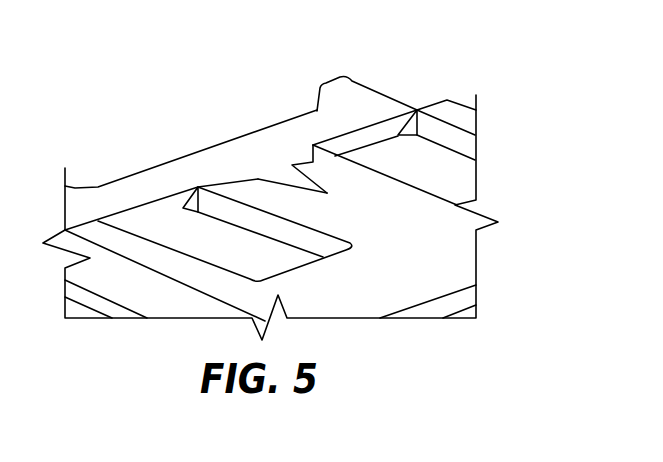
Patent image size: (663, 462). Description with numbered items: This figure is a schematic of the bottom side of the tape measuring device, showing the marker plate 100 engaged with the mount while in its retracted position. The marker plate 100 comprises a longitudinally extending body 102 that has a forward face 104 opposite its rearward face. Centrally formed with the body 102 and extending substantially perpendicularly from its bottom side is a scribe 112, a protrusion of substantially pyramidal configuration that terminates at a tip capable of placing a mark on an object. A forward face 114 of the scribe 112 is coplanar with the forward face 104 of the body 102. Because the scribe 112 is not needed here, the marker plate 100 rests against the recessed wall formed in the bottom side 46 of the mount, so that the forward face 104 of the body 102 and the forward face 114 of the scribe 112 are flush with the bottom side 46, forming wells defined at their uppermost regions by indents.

The marker plate 100 is at (408, 90).
The bottom side 46 is at (394, 305).
The longitudinally extending body 102 is at (212, 150).
The forward face 104 is at (356, 87).
The scribe 112 is at (283, 168).
The forward face 114 is at (304, 178).